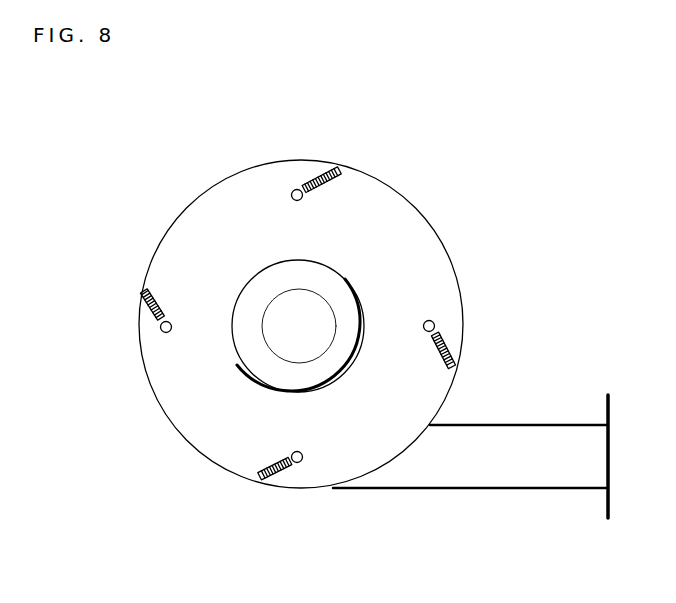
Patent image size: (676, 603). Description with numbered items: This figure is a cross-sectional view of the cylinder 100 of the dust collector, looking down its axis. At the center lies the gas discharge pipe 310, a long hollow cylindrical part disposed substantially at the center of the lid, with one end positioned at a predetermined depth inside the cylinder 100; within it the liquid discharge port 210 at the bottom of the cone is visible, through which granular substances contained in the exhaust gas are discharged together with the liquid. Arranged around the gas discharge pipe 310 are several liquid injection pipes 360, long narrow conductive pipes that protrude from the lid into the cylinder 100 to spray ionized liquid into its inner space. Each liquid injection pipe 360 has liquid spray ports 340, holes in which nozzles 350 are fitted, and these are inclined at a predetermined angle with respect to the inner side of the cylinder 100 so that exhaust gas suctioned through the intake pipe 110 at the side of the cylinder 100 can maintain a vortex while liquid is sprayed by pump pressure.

The cylinder 100 is at (134, 312).
The intake pipe 110 is at (515, 424).
The liquid discharge port 210 is at (275, 350).
The gas discharge pipe 310 is at (338, 274).
The liquid spray port 340 is at (429, 332).
The nozzle 350 is at (435, 327).
The liquid injection pipe 360 is at (300, 190).